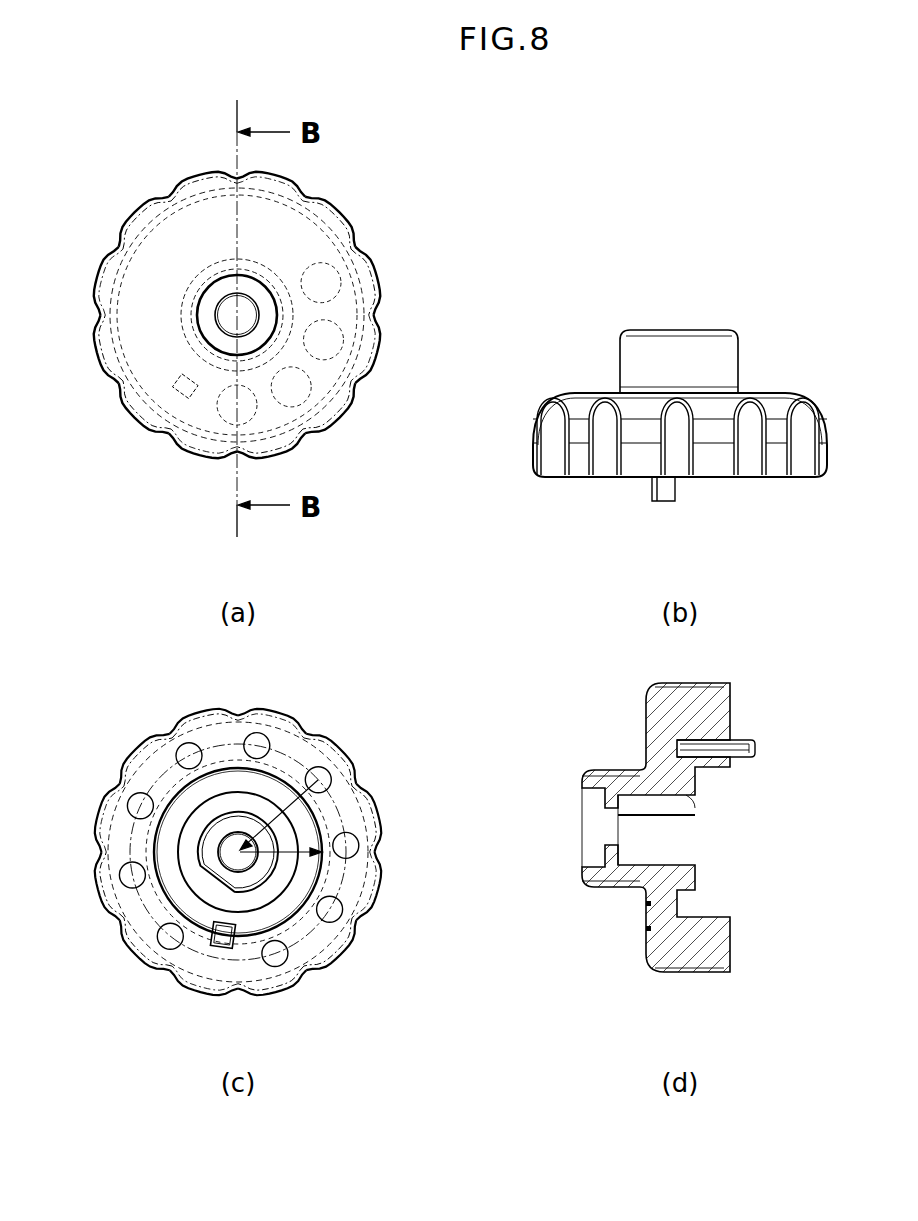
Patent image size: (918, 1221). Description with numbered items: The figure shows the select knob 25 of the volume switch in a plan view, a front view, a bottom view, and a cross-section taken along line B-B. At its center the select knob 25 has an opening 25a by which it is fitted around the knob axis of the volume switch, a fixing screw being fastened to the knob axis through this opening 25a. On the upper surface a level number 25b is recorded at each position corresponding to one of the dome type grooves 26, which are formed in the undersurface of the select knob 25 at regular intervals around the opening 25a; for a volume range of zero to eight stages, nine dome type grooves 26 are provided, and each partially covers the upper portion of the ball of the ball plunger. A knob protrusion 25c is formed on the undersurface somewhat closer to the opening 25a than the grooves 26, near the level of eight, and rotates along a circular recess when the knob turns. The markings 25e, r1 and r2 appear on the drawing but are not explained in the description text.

The select knob 25 is at (403, 215).
The opening 25a is at (656, 850).
The level number 25b is at (335, 335).
The knob protrusion 25c is at (193, 385).
The scale number indication 25e is at (173, 250).
The dome type grooves 26 is at (312, 388).
The radius r1 is at (303, 794).
The radius r2 is at (240, 853).